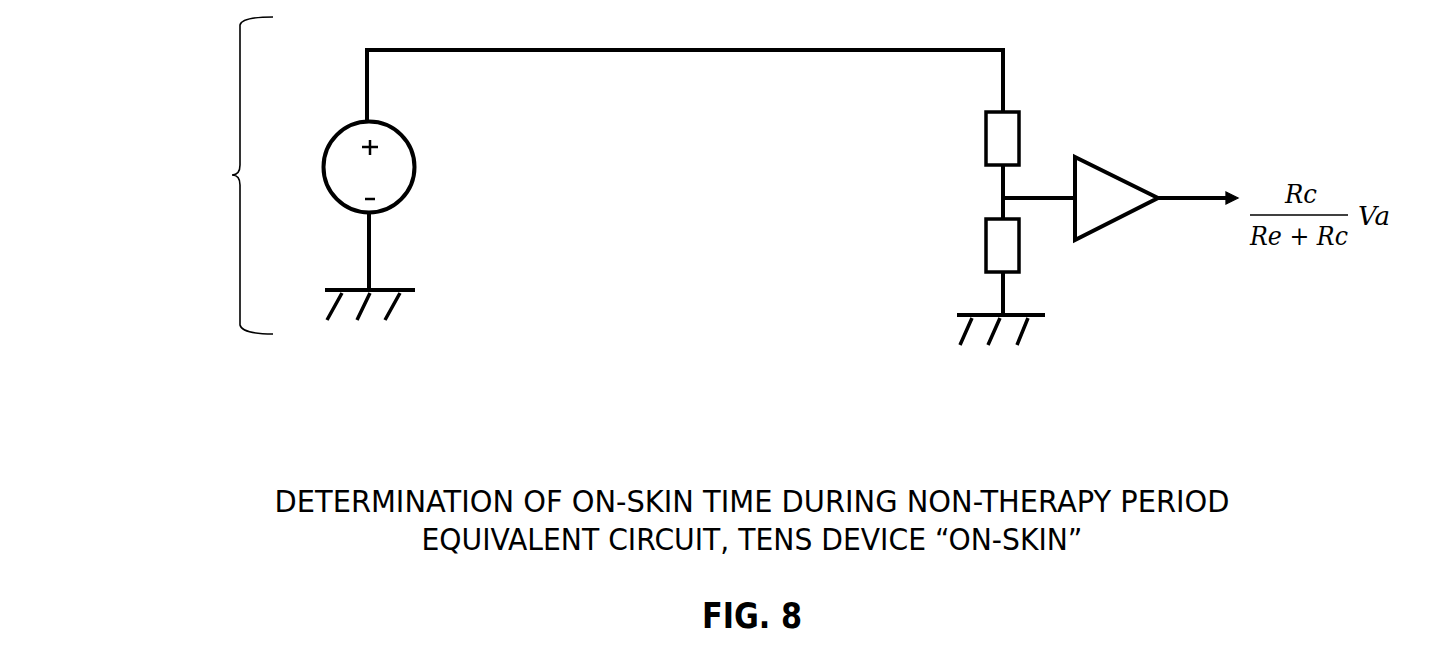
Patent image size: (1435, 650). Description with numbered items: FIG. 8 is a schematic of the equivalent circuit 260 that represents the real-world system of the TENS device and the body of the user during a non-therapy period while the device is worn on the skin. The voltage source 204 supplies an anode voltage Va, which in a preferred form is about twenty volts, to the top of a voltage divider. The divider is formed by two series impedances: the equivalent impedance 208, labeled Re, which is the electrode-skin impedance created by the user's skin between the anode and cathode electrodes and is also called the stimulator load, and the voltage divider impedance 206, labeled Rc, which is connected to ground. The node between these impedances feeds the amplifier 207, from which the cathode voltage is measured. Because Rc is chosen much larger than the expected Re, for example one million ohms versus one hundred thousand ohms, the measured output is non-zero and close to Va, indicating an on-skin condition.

The equivalent circuit 260 is at (232, 175).
The voltage source 204 is at (337, 122).
The equivalent impedance 208 is at (1013, 130).
The voltage divider impedance 206 is at (1007, 247).
The amplifier 207 is at (1102, 212).